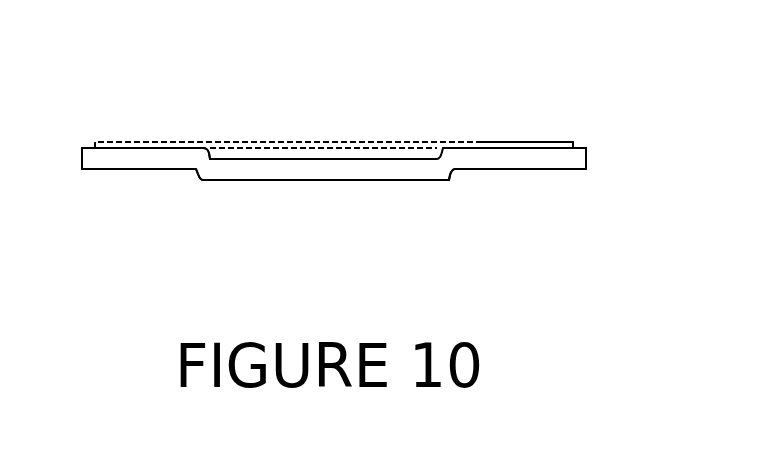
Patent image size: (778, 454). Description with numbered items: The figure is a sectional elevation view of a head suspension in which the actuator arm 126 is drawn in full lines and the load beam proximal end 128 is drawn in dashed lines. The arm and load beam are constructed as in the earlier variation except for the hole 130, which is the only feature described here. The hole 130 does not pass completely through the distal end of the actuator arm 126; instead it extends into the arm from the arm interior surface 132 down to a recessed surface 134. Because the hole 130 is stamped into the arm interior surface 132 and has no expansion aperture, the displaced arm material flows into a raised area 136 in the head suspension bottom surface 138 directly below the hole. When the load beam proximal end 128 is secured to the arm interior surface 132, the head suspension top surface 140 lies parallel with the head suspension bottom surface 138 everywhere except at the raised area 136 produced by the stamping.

The actuator arm 126 is at (582, 148).
The load beam proximal end 128 is at (500, 148).
The hole 130 is at (338, 160).
The arm interior surface 132 is at (137, 148).
The recessed surface 134 is at (264, 159).
The raised area 136 is at (295, 180).
The head suspension bottom surface 138 is at (512, 170).
The head suspension top surface 140 is at (162, 146).